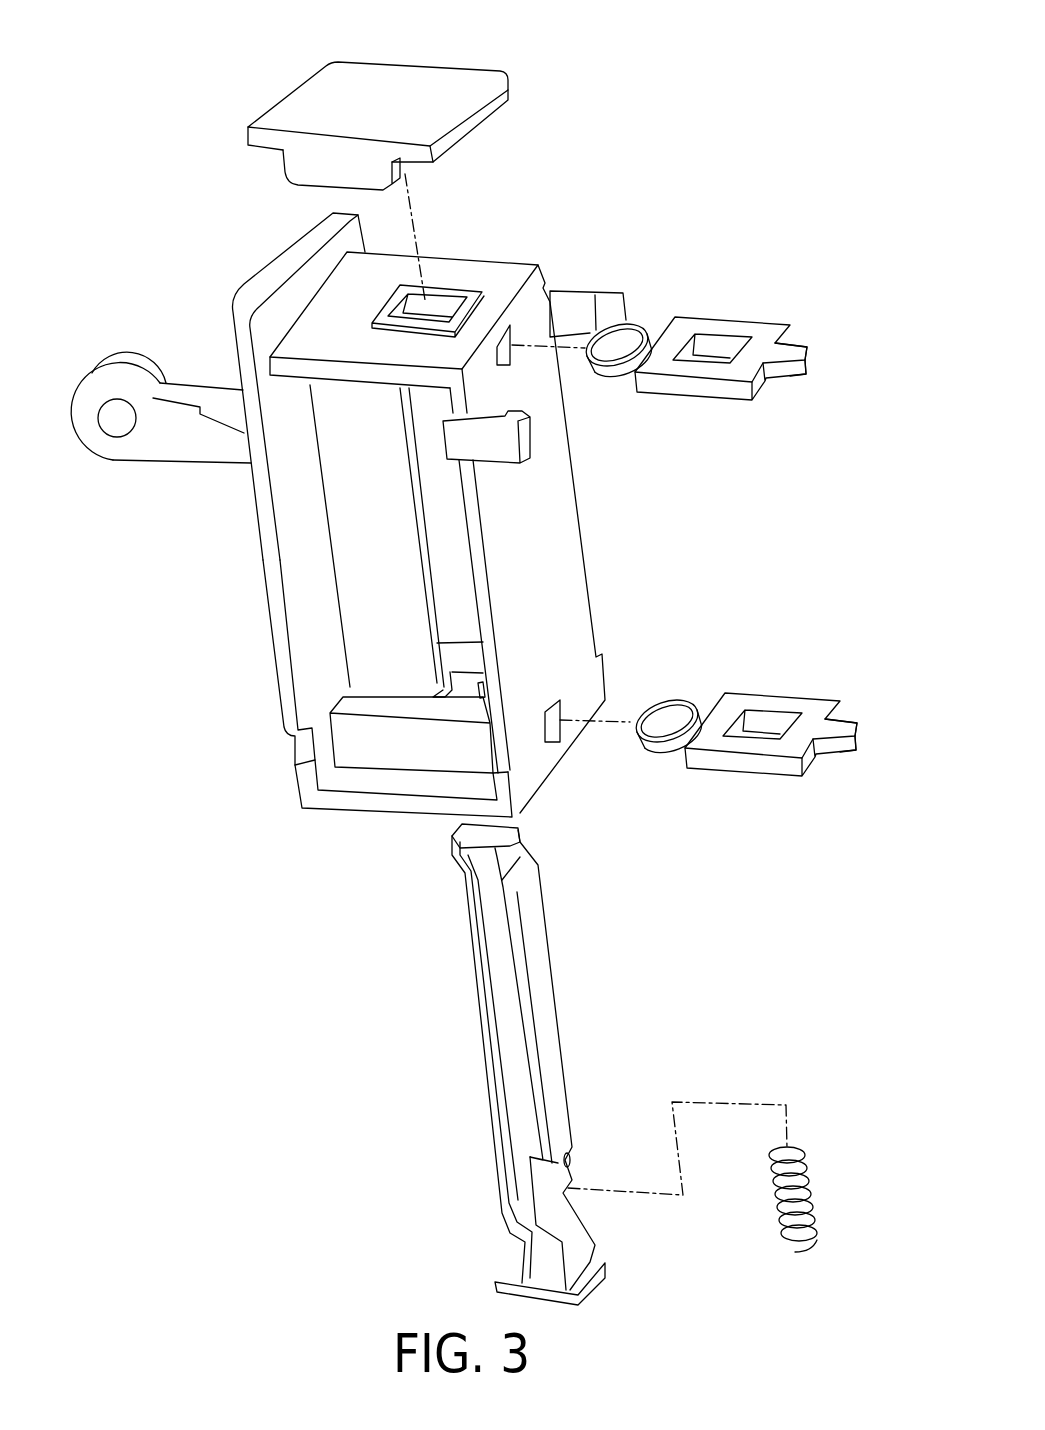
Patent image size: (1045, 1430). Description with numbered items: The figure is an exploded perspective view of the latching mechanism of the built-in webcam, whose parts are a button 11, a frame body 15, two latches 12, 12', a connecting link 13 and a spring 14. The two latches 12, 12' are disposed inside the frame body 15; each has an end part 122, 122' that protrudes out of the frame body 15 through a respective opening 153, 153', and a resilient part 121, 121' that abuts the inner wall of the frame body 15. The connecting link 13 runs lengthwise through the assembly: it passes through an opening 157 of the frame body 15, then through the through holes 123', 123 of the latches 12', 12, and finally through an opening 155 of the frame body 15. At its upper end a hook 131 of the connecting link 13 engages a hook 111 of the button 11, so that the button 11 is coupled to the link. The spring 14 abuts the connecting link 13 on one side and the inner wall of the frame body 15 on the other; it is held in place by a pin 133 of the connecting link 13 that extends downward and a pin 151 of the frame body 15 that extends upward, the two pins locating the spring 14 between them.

The button 11 is at (326, 105).
The hook 111 is at (296, 172).
The latch 12 is at (694, 294).
The resilient part 121 is at (618, 311).
The end part 122 is at (786, 306).
The through hole 123 is at (721, 318).
The latch 12' is at (745, 670).
The resilient part 121' is at (670, 685).
The end part 122' is at (836, 681).
The through hole 123' is at (771, 693).
The connecting link 13 is at (504, 1064).
The hook 131 is at (453, 850).
The pin 133 is at (570, 1160).
The spring 14 is at (812, 1188).
The frame body 15 is at (369, 498).
The pin 151 is at (480, 685).
The opening 153 is at (564, 392).
The opening 153' is at (606, 764).
The opening 155 is at (442, 305).
The opening 157 is at (470, 675).